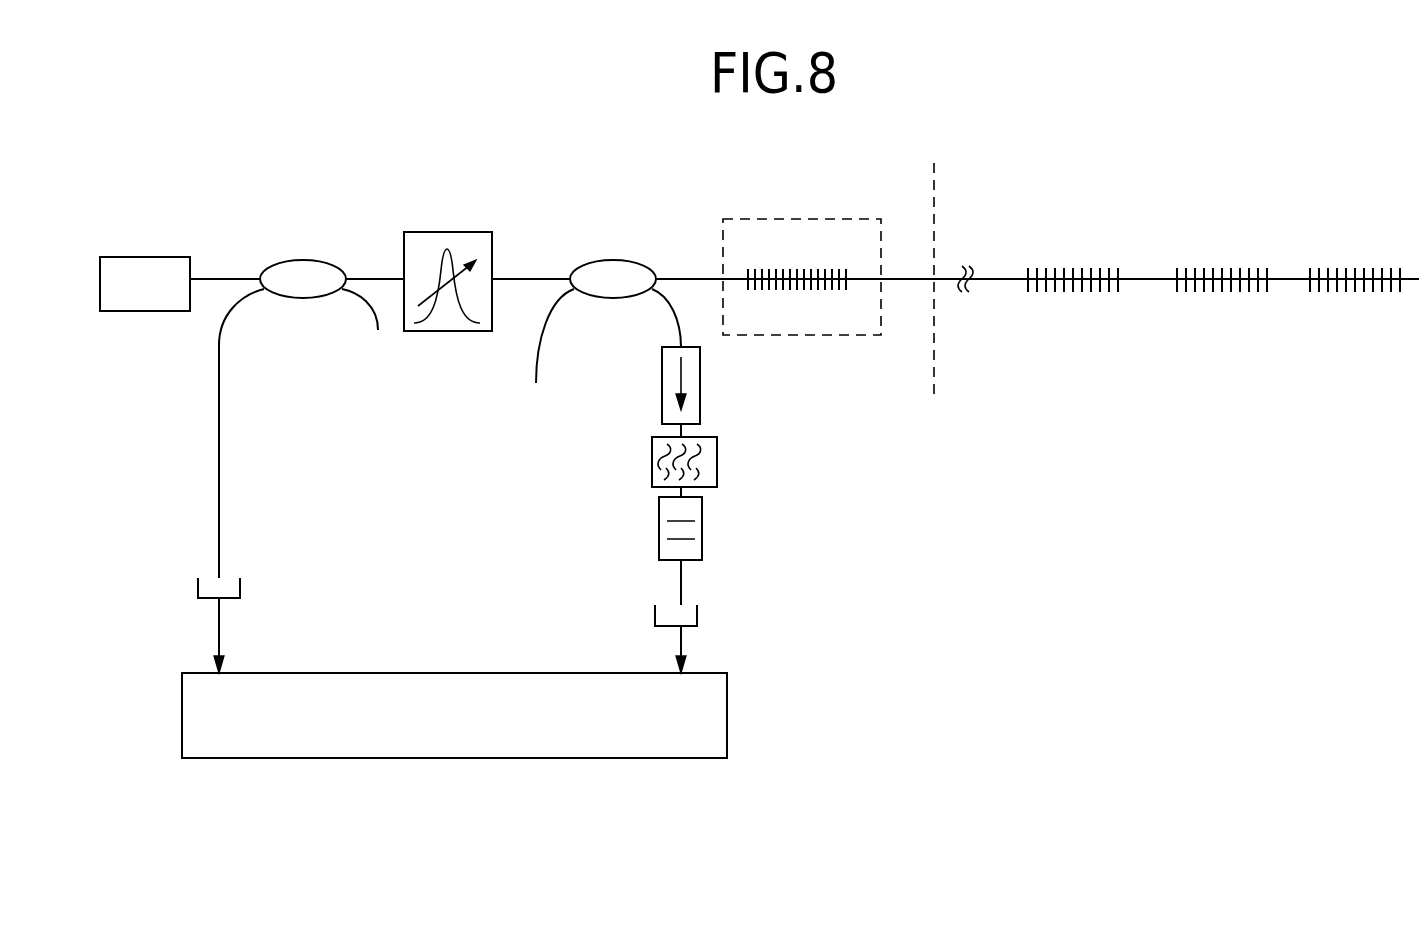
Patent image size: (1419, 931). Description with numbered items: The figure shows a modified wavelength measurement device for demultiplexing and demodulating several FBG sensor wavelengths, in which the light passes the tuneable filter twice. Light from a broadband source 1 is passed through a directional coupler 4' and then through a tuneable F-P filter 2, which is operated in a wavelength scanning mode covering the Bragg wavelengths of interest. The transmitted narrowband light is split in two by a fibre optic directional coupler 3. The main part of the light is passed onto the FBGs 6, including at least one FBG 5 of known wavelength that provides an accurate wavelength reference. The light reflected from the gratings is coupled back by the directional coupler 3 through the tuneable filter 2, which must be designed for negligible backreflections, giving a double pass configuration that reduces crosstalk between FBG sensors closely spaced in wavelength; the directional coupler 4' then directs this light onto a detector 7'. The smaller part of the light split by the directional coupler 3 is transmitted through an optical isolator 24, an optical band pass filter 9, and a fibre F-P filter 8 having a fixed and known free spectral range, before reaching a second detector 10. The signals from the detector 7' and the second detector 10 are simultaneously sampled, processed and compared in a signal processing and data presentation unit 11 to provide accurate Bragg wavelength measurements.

The broadband source 1 is at (145, 266).
The directional coupler 4' is at (298, 402).
The tuneable F-P filter 2 is at (448, 261).
The fibre optic directional coupler 3 is at (608, 300).
The FBG with known wavelength 5 is at (802, 277).
The FBGs 6 is at (1214, 260).
The optical isolator 24 is at (706, 392).
The optical band pass filter 9 is at (696, 467).
The fibre F-P filter 8 is at (699, 551).
The second detector 10 is at (697, 635).
The detector 7' is at (231, 625).
The signal processing and data presentation unit 11 is at (454, 715).